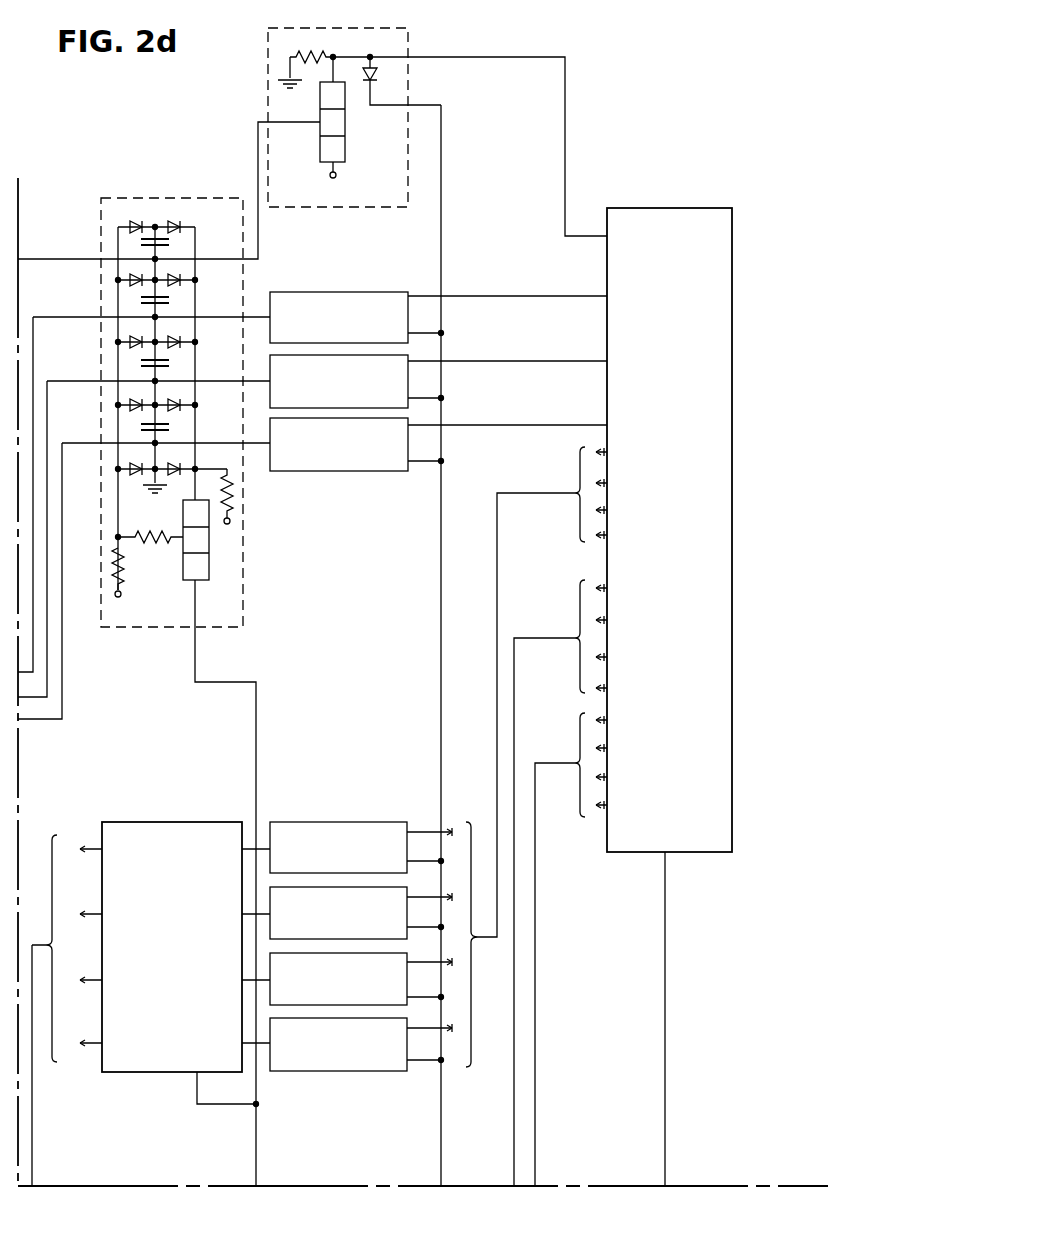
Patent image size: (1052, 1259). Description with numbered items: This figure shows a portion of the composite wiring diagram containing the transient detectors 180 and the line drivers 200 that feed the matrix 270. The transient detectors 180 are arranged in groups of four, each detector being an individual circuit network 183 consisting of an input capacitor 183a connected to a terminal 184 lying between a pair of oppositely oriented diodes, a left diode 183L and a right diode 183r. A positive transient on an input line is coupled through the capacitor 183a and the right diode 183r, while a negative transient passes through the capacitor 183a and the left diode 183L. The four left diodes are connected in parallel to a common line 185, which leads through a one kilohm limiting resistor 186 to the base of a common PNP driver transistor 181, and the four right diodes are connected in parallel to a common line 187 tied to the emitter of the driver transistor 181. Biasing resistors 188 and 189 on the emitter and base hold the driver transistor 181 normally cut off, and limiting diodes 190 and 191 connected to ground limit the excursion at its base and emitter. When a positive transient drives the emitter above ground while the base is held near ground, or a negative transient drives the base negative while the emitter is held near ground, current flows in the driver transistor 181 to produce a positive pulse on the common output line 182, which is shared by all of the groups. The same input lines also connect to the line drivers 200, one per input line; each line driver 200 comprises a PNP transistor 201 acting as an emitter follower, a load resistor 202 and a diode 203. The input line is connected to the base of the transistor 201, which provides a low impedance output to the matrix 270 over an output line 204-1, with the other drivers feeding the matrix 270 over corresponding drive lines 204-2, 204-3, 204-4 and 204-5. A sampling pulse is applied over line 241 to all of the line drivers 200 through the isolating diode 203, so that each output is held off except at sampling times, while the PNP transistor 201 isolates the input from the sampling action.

The transient detectors 180 is at (120, 197).
The driver transistor 181 is at (208, 580).
The output line 182 is at (212, 686).
The circuit network 183 is at (172, 231).
The left diode 183L is at (137, 221).
The right diode 183r is at (182, 222).
The input capacitor 183a is at (149, 244).
The terminal 184 is at (161, 208).
The common line 185 is at (118, 300).
The limiting resistor 186 is at (160, 544).
The common line 187 is at (193, 310).
The biasing resistor 188 is at (233, 500).
The biasing resistor 189 is at (121, 582).
The limiting diode 190 is at (134, 477).
The limiting diode 191 is at (181, 467).
The line driver 200 is at (408, 58).
The PNP transistor 201 is at (346, 149).
The load resistor 202 is at (303, 62).
The diode 203 is at (376, 76).
The output line 204-1 is at (565, 141).
The drive line 204-2 is at (452, 297).
The drive line 204-3 is at (455, 362).
The drive line 204-4 is at (455, 426).
The drive line 204-5 is at (452, 830).
The sampling pulse line 241 is at (442, 141).
The matrix 270 is at (673, 208).